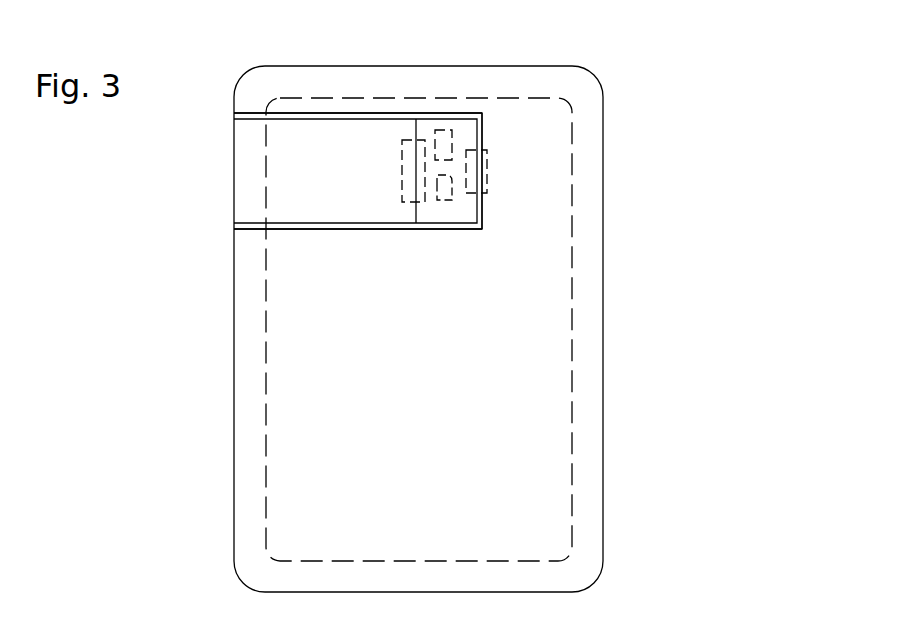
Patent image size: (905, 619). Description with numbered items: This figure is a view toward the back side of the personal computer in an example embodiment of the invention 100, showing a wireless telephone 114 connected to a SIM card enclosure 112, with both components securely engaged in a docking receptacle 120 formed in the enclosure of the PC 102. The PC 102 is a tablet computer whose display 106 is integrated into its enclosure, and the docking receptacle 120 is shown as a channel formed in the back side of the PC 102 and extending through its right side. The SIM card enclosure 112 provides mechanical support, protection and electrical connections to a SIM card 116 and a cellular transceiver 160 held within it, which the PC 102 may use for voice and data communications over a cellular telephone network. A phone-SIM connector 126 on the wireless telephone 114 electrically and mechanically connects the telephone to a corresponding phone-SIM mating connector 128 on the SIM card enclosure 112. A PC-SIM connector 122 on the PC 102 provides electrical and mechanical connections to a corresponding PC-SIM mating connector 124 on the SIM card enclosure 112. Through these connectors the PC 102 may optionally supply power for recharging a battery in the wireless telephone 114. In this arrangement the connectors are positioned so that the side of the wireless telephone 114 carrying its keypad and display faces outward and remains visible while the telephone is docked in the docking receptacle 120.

The embodiment of the invention 100 is at (720, 265).
The personal computer 102 is at (603, 165).
The display 106 is at (266, 413).
The SIM card enclosure 112 is at (461, 223).
The wireless telephone 114 is at (257, 118).
The SIM card 116 is at (443, 201).
The docking receptacle 120 is at (247, 230).
The PC-SIM connector 122 is at (487, 150).
The PC-SIM mating connector 124 is at (471, 194).
The phone-SIM connector 126 is at (404, 201).
The phone-SIM mating connector 128 is at (416, 122).
The cellular transceiver 160 is at (440, 130).